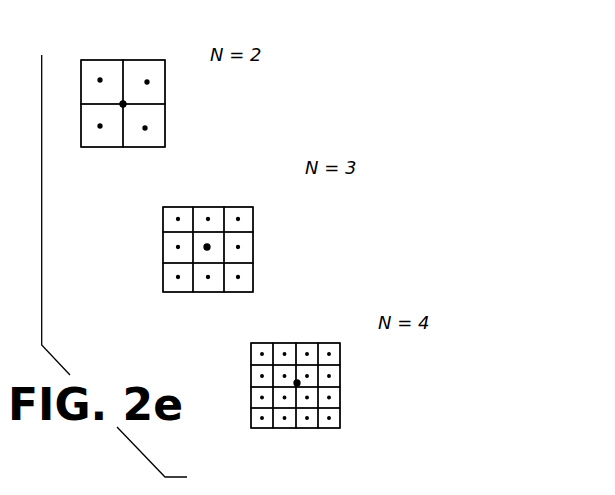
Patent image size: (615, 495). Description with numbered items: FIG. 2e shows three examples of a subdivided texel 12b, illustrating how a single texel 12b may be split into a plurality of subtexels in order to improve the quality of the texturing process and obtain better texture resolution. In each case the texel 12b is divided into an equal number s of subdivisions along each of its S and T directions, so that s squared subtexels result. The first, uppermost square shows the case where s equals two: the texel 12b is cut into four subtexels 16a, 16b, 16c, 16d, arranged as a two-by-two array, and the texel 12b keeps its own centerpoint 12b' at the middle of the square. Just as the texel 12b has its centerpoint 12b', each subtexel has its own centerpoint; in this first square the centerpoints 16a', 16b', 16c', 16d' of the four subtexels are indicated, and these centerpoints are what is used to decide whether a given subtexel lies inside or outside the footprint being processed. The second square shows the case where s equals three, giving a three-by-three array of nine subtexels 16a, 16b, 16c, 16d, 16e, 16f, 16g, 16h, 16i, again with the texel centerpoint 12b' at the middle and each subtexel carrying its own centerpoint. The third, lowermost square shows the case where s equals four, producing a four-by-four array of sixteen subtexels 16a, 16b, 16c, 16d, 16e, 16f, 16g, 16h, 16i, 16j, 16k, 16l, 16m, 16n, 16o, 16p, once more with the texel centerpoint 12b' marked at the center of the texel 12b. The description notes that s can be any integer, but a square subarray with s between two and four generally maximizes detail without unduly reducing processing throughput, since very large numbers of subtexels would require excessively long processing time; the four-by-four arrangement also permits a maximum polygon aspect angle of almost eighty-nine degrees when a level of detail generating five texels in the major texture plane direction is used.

The texel 12b is at (237, 244).
The centerpoint of texel 12b' is at (219, 249).
The subtexel 16a is at (177, 187).
The centerpoint of subtexel 16a' is at (71, 57).
The subtexel 16b is at (209, 185).
The centerpoint of subtexel 16b' is at (175, 56).
The subtexel 16c is at (193, 234).
The centerpoint of subtexel 16c' is at (72, 119).
The subtexel 16d is at (239, 234).
The centerpoint of subtexel 16d' is at (182, 129).
The subtexel 16e is at (200, 256).
The subtexel 16f is at (253, 250).
The subtexel 16g is at (167, 283).
The subtexel 16h is at (203, 285).
The subtexel 16i is at (250, 274).
The subtexel 16j is at (280, 402).
The subtexel 16k is at (312, 392).
The subtexel 16l is at (338, 402).
The subtexel 16m is at (258, 430).
The subtexel 16n is at (282, 430).
The subtexel 16o is at (308, 430).
The subtexel 16p is at (332, 430).